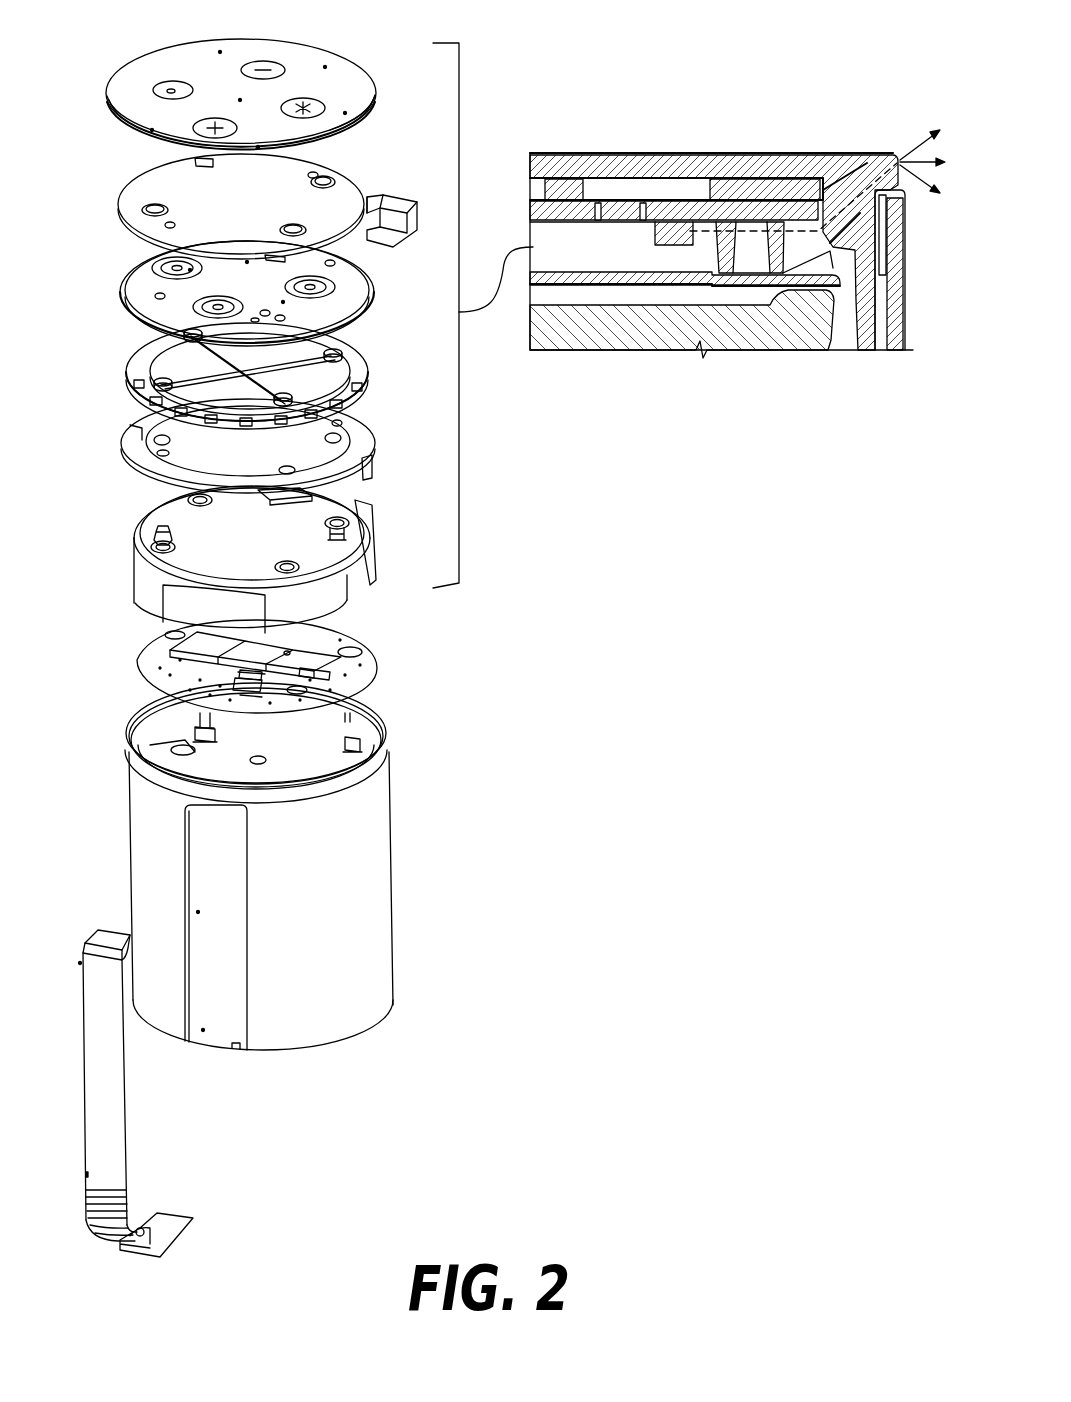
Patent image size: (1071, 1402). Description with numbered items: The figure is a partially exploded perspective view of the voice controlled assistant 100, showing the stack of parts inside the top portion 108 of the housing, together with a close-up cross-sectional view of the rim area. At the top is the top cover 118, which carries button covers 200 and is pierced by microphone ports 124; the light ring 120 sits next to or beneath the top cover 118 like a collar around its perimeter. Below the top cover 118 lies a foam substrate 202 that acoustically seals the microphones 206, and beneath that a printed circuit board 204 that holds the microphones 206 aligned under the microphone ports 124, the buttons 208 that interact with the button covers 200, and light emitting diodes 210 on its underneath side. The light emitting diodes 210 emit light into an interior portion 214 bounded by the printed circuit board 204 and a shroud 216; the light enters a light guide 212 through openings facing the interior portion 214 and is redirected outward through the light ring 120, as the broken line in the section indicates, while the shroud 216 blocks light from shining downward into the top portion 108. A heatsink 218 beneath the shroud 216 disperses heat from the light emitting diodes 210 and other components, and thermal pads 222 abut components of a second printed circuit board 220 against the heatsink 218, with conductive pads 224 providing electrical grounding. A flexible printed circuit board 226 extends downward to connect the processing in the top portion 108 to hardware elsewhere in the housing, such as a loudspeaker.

The voice controlled assistant 100 is at (343, 53).
The top portion 108 is at (390, 833).
The top cover 118 is at (143, 62).
The light ring 120 is at (120, 137).
The microphone ports 124 is at (350, 110).
The button covers 200 is at (157, 88).
The foam substrate 202 is at (123, 207).
The printed circuit board 204 is at (137, 265).
The microphones 206 is at (177, 285).
The buttons 208 is at (327, 287).
The light emitting diodes 210 is at (141, 321).
The light guide 212 is at (363, 377).
The interior portion 214 is at (609, 260).
The shroud 216 is at (123, 437).
The heatsink 218 is at (153, 520).
The printed circuit board 220 is at (365, 655).
The thermal pads 222 is at (180, 643).
The conductive pads 224 is at (250, 645).
The flexible printed circuit board 226 is at (120, 933).